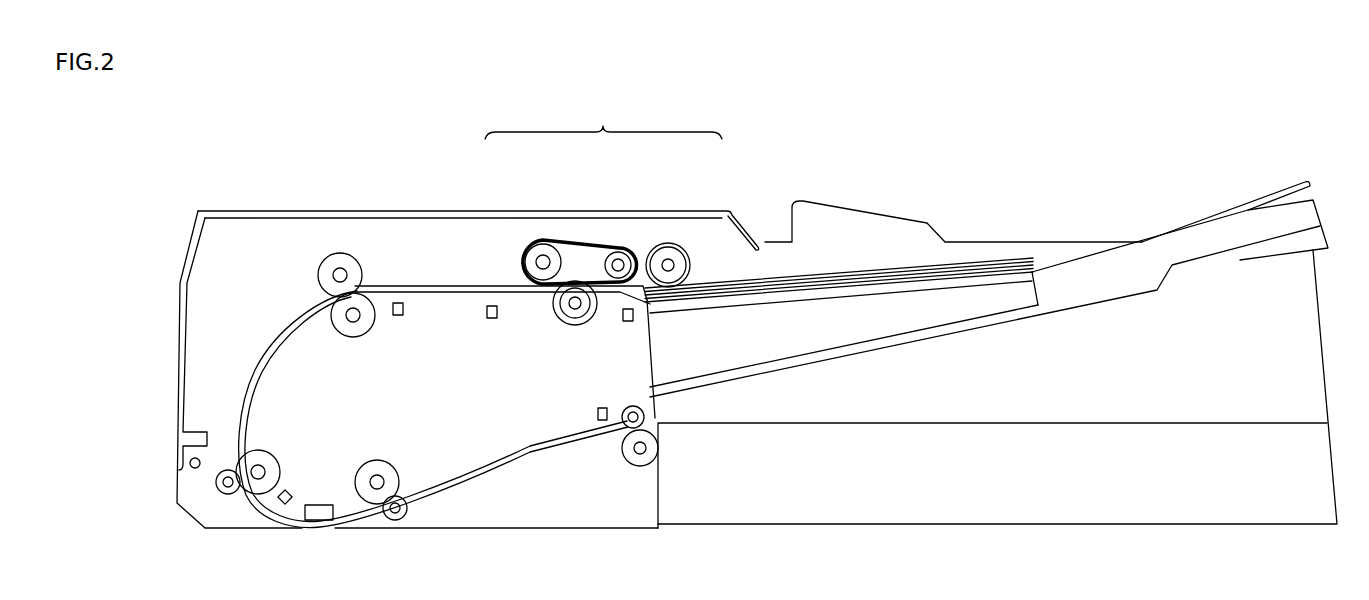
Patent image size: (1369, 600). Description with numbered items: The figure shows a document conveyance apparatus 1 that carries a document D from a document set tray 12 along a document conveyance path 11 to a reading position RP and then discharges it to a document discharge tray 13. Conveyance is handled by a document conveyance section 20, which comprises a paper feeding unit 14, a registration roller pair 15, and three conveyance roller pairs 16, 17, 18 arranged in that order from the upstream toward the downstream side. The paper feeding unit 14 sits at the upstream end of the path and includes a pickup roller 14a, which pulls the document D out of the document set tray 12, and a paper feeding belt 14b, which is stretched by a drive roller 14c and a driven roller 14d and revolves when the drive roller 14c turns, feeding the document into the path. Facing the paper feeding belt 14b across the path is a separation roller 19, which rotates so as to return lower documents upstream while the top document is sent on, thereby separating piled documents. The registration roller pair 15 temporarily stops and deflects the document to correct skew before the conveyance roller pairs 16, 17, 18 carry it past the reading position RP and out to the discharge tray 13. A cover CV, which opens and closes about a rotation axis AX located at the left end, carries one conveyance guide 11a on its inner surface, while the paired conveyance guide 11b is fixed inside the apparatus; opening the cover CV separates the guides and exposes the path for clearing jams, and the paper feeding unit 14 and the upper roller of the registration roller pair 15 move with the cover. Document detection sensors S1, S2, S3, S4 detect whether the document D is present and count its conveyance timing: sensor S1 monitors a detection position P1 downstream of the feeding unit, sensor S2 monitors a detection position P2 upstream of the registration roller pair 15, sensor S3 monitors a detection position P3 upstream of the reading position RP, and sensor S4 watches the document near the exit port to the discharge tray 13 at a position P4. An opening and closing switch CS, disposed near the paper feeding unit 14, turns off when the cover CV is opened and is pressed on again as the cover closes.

The document conveyance apparatus 1 is at (196, 209).
The document conveyance path 11 is at (272, 355).
The conveyance guide 11a is at (415, 284).
The conveyance guide 11b is at (445, 294).
The document set tray 12 is at (875, 283).
The document discharge tray 13 is at (950, 421).
The paper feeding unit 14 is at (761, 349).
The pickup roller 14a is at (672, 254).
The paper feeding belt 14b is at (585, 250).
The drive roller 14c is at (537, 246).
The driven roller 14d is at (620, 252).
The registration roller pair 15 is at (322, 272).
The conveyance roller pair 16 is at (264, 450).
The conveyance roller pair 17 is at (386, 461).
The conveyance roller pair 18 is at (641, 467).
The separation roller 19 is at (575, 326).
The document conveyance section 20 is at (250, 284).
The cover CV is at (320, 210).
The document D is at (823, 280).
The rotation axis AX is at (178, 478).
The reading position RP is at (320, 526).
The opening and closing switch CS is at (629, 323).
The document detection sensor S1 is at (492, 320).
The document detection sensor S2 is at (398, 317).
The document detection sensor S3 is at (292, 491).
The document detection sensor S4 is at (596, 414).
The detection position P1 is at (497, 282).
The detection position P2 is at (398, 282).
The detection position P3 is at (255, 514).
The detection position P4 is at (606, 442).